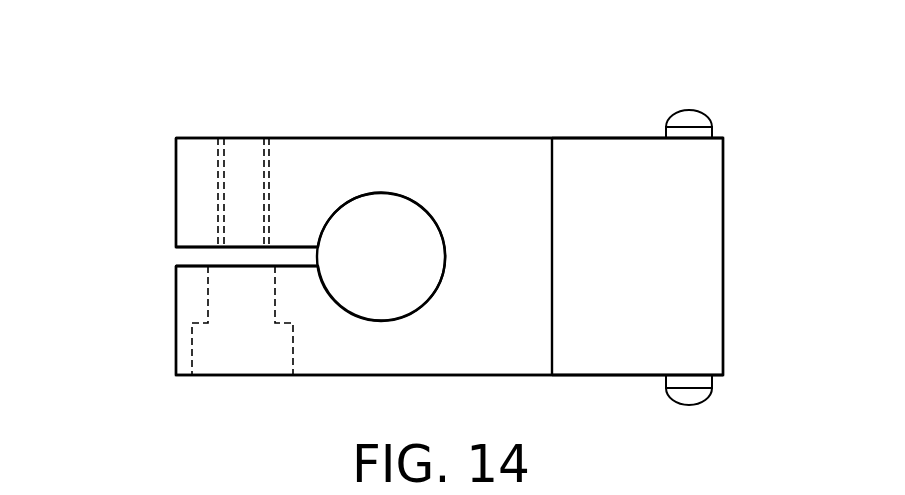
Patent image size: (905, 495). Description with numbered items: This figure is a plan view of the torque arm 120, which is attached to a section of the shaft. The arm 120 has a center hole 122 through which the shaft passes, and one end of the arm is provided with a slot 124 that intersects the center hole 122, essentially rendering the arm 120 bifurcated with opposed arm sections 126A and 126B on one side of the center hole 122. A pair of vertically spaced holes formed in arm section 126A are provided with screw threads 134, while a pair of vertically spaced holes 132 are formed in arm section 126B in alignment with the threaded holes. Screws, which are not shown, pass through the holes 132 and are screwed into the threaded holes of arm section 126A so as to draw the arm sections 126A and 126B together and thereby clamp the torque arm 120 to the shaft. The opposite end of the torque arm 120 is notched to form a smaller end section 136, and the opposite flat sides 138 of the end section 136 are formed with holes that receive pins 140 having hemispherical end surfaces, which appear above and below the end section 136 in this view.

The torque arm 120 is at (373, 92).
The center hole 122 is at (402, 202).
The slot 124 is at (187, 257).
The arm section 126A is at (176, 200).
The arm section 126B is at (176, 340).
The holes 132 is at (210, 372).
The screw threads 134 is at (222, 176).
The end section 136 is at (700, 258).
The flat sides 138 is at (593, 138).
The pins 140 is at (687, 108).